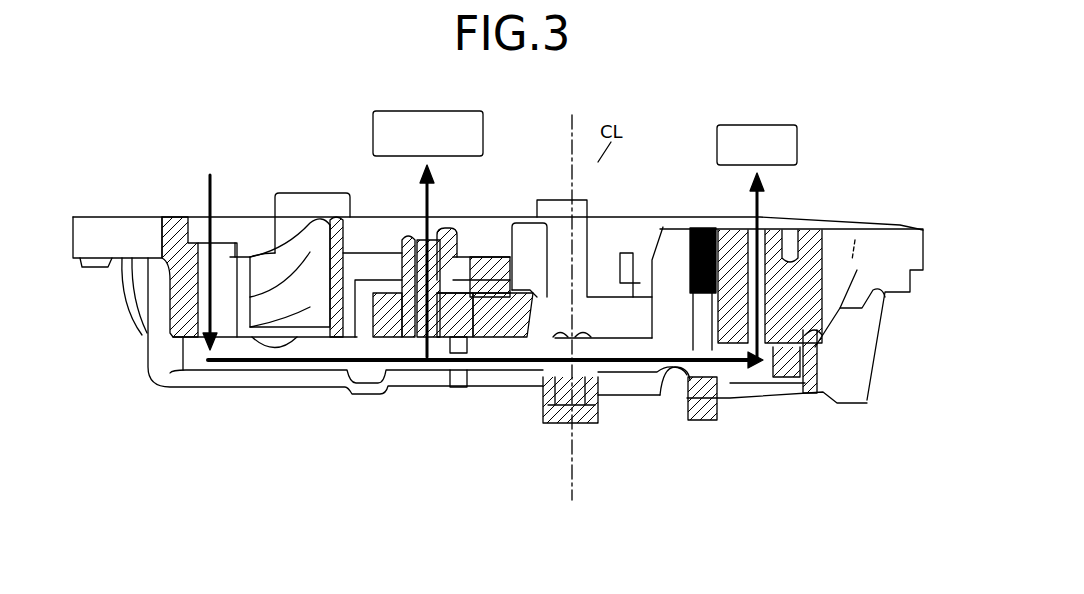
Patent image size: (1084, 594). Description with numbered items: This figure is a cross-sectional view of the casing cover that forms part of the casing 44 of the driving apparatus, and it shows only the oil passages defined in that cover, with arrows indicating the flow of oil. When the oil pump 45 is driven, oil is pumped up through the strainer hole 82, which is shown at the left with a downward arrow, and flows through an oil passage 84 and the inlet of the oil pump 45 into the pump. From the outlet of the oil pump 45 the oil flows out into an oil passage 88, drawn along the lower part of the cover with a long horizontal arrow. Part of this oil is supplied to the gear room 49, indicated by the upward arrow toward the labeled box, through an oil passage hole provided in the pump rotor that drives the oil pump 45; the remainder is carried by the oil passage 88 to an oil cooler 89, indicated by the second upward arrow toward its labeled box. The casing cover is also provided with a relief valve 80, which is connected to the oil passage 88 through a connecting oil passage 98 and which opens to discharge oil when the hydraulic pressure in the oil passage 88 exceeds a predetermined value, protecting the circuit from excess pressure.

The casing 44 is at (317, 402).
The oil pump 45 is at (468, 260).
The gear room 49 is at (418, 120).
The relief valve 80 is at (701, 216).
The strainer hole 82 is at (198, 233).
The oil passage 84 is at (248, 333).
The oil passage 88 is at (685, 400).
The oil cooler 89 is at (775, 135).
The connecting oil passage 98 is at (703, 330).